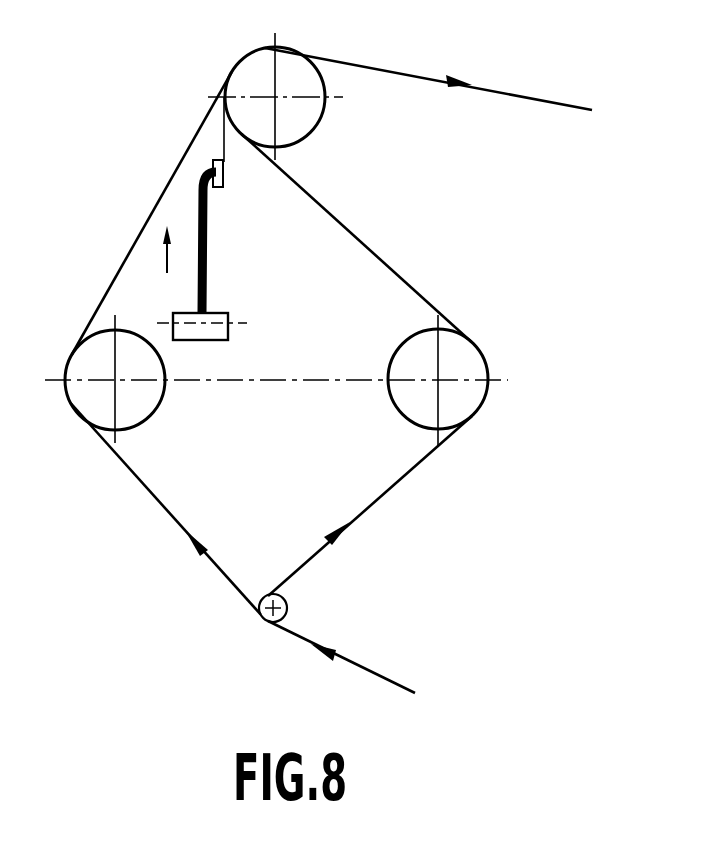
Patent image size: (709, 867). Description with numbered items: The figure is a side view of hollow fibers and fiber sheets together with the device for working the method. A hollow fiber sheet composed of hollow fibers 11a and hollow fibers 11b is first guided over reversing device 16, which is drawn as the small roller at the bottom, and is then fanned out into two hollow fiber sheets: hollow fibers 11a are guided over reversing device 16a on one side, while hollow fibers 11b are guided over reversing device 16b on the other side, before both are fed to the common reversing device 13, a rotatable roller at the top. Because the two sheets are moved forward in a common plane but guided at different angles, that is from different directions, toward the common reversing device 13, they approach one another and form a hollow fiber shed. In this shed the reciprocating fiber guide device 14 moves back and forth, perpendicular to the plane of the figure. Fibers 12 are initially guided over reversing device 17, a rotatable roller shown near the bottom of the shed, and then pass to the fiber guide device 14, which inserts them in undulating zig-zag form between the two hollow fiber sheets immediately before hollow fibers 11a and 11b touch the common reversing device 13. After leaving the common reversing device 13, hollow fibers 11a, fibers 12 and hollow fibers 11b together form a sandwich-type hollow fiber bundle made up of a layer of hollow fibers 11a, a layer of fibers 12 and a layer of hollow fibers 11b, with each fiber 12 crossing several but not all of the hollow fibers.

The hollow fibers 11a is at (148, 218).
The hollow fibers 11b is at (405, 282).
The fibers 12 is at (208, 253).
The common reversing device 13 is at (303, 113).
The fiber guide device 14 is at (212, 175).
The reversing device 16 is at (283, 598).
The reversing device 16a is at (88, 363).
The reversing device 16b is at (462, 358).
The reversing device 17 is at (220, 312).